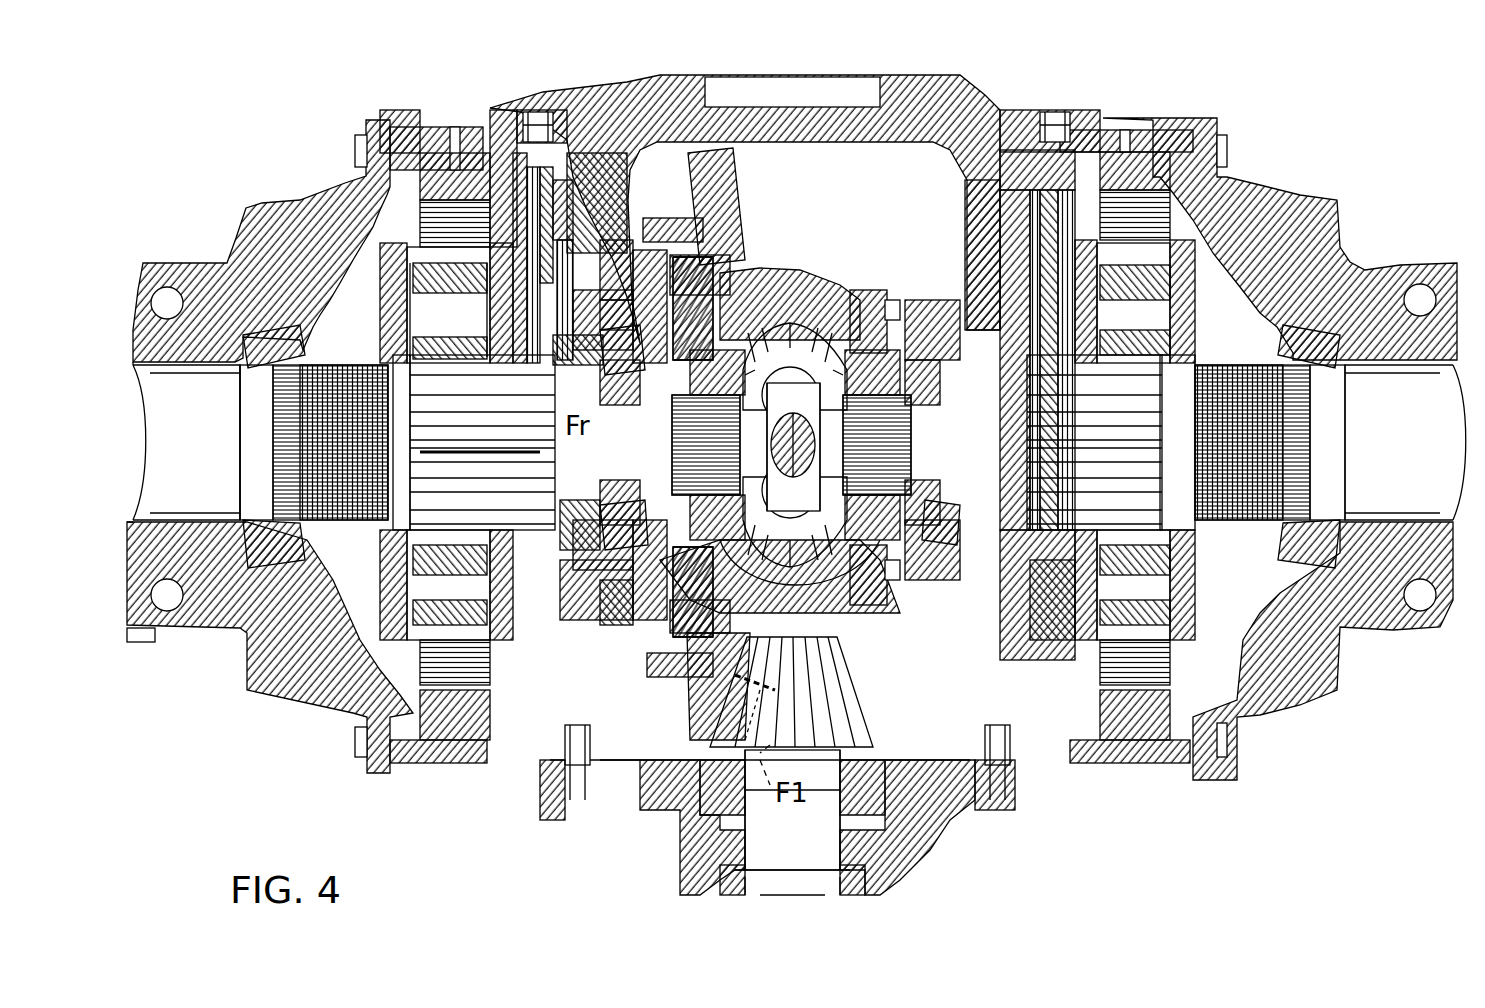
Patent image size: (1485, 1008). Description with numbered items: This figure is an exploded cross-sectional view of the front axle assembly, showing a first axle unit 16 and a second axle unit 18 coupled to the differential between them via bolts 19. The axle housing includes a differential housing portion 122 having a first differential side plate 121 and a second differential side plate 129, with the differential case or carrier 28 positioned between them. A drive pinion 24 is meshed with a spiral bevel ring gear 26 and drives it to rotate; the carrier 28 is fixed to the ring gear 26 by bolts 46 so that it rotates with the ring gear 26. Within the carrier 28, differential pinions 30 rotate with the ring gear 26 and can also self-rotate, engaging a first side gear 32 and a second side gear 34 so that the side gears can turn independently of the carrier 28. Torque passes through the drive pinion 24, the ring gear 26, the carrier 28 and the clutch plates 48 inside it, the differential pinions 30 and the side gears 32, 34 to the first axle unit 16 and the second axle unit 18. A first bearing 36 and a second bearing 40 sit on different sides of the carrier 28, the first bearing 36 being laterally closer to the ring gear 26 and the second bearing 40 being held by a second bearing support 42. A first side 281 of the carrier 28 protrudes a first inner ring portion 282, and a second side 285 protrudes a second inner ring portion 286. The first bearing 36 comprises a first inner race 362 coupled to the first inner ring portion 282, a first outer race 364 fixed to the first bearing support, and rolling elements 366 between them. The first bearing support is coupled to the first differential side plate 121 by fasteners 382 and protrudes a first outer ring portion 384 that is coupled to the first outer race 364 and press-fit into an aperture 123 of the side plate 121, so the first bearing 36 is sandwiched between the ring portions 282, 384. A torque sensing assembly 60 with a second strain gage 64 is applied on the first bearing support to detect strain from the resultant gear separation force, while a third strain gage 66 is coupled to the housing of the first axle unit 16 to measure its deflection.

The first axle unit 16 is at (133, 236).
The second axle unit 18 is at (1338, 168).
The bolts 19 is at (355, 150).
The drive pinion 24 is at (840, 700).
The ring gear 26 is at (728, 207).
The differential case (carrier) 28 is at (812, 245).
The differential pinions 30 is at (818, 340).
The first side gear 32 is at (700, 405).
The second side gear 34 is at (880, 405).
The first bearing 36 is at (590, 565).
The second bearing 40 is at (965, 525).
The second bearing support 42 is at (945, 325).
The bolts 46 is at (653, 215).
The clutch plates 48 is at (740, 590).
The torque sensing assembly 60 is at (720, 526).
The second strain gage 64 is at (580, 380).
The third strain gage 66 is at (140, 643).
The first differential side plate 121 is at (603, 300).
The differential housing portion 122 is at (780, 50).
The aperture 123 is at (605, 335).
The second differential side plate 129 is at (970, 290).
The first side of carrier 281 is at (640, 625).
The first inner ring portion 282 is at (572, 505).
The second side of carrier 285 is at (900, 560).
The second inner ring portion 286 is at (1140, 497).
The first inner race 362 is at (615, 505).
The first outer race 364 is at (565, 520).
The rolling elements 366 is at (590, 495).
The fasteners 382 is at (545, 322).
The first outer ring portion 384 is at (620, 625).